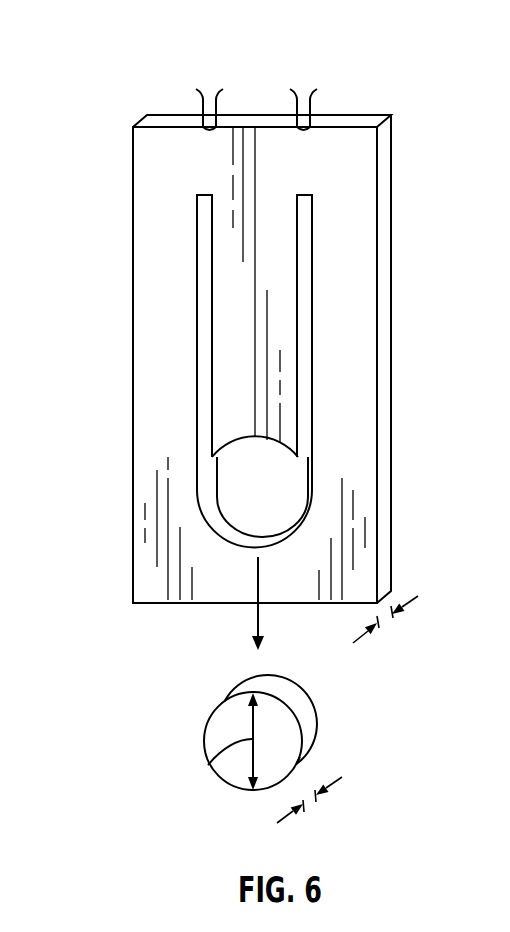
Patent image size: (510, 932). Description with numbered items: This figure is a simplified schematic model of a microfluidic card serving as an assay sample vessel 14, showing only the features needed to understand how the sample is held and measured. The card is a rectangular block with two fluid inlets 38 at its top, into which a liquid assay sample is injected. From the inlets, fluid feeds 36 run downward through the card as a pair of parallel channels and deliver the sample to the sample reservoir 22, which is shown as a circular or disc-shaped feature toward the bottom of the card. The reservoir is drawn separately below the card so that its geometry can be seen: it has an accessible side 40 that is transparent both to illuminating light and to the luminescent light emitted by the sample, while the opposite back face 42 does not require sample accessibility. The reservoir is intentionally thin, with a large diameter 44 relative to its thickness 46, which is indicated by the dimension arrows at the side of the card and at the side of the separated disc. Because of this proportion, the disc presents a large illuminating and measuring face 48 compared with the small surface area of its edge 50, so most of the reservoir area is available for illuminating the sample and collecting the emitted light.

The assay sample vessel 14 is at (114, 49).
The sample reservoir 22 is at (298, 487).
The fluid feeds 36 is at (197, 240).
The fluid inlets 38 is at (200, 105).
The accessible side 40 is at (250, 490).
The back face 42 is at (305, 690).
The diameter 44 is at (213, 764).
The thickness 46 is at (393, 618).
The illuminating and measuring face 48 is at (225, 722).
The edge 50 is at (307, 745).